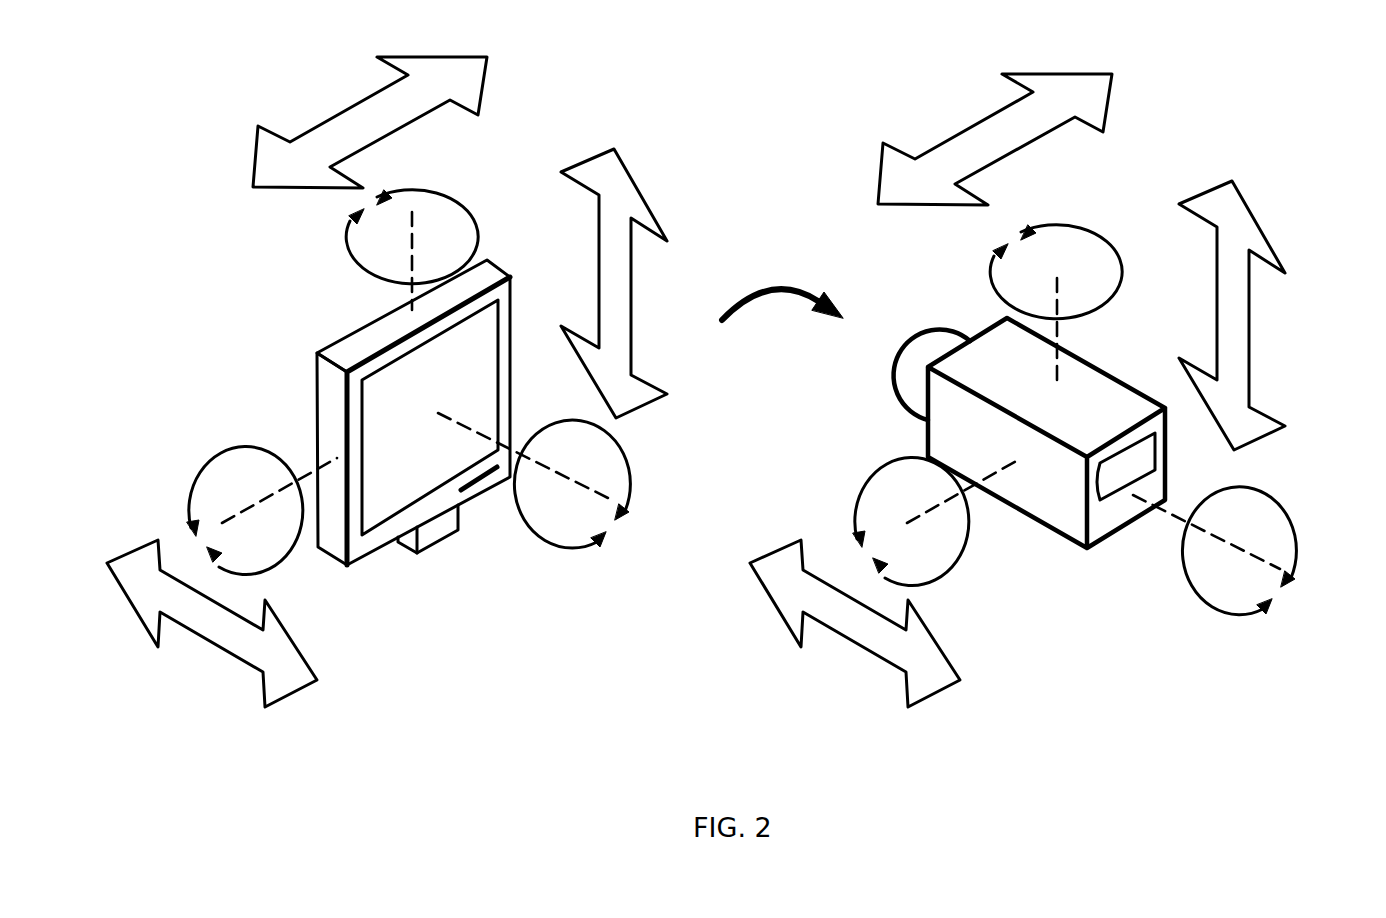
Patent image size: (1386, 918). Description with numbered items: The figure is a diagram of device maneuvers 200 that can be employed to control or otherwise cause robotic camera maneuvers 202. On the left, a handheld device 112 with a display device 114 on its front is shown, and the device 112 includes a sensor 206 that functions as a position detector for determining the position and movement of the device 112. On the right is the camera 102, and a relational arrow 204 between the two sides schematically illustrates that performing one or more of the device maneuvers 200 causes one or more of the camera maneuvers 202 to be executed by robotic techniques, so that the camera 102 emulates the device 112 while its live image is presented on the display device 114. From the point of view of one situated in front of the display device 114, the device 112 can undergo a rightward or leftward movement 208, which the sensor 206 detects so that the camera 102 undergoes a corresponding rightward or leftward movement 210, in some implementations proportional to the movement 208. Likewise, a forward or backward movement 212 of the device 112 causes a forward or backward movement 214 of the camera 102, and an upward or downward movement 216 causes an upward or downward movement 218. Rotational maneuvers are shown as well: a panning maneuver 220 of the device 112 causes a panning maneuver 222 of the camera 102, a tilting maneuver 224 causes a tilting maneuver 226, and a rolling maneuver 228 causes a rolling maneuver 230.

The camera 102 is at (930, 328).
The handheld device 112 is at (373, 423).
The display device 114 is at (398, 428).
The device maneuvers 200 is at (500, 668).
The robotic camera maneuvers 202 is at (1171, 668).
The relational arrow 204 is at (773, 288).
The sensor 206 is at (438, 543).
The rightward or leftward movement 208 is at (346, 108).
The rightward or leftward movement 210 is at (982, 122).
The forward or backward movement 212 is at (213, 645).
The forward or backward movement 214 is at (860, 647).
The upward or downward movement 216 is at (631, 316).
The upward or downward movement 218 is at (1249, 346).
The panning maneuver 220 is at (458, 194).
The panning maneuver 222 is at (1090, 227).
The tilting maneuver 224 is at (197, 468).
The tilting maneuver 226 is at (863, 478).
The rolling maneuver 228 is at (630, 469).
The rolling maneuver 230 is at (1295, 532).